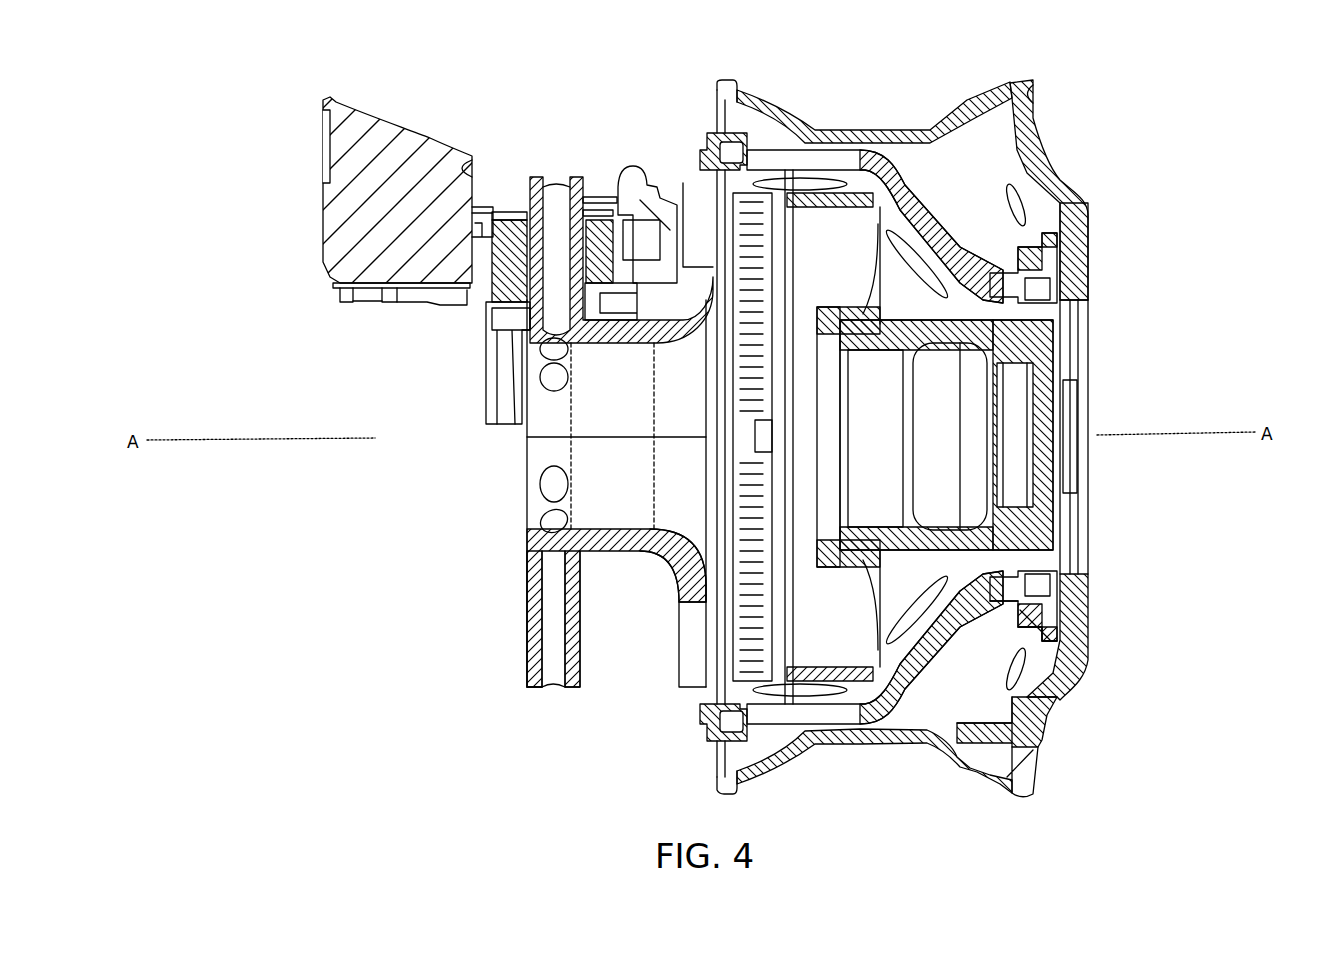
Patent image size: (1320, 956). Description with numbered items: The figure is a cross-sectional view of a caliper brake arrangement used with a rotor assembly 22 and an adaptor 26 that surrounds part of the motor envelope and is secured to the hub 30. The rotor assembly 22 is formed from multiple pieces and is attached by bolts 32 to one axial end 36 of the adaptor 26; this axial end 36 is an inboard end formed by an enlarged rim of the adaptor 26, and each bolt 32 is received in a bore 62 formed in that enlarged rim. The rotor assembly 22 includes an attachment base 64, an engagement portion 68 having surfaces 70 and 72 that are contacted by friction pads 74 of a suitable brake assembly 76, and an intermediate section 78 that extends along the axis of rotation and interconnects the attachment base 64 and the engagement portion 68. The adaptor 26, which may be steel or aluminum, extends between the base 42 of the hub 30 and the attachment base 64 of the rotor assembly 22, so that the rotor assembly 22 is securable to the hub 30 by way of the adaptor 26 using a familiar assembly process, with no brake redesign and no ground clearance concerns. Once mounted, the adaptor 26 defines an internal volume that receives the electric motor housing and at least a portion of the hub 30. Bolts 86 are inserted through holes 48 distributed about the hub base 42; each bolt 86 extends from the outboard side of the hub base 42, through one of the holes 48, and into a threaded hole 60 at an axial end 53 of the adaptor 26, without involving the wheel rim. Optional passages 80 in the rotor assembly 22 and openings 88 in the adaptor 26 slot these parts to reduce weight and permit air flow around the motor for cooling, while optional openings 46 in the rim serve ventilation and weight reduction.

The rotor assembly 22 is at (529, 534).
The adaptor 26 is at (886, 170).
The hub 30 is at (1030, 330).
The bolts 32 is at (700, 150).
The axial end 36 is at (700, 735).
The base 42 is at (1045, 620).
The openings 46 is at (1033, 723).
The holes 48 is at (1062, 233).
The axial end 53 is at (985, 605).
The threaded hole 60 is at (1010, 273).
The bore 62 is at (718, 140).
The attachment base 64 is at (689, 589).
The engagement portion 68 is at (529, 692).
The surface 70 is at (530, 615).
The surface 72 is at (582, 670).
The friction pads 74 is at (597, 227).
The brake assembly 76 is at (333, 277).
The intermediate section 78 is at (610, 538).
The passages 80 is at (547, 521).
The bolts 86 is at (1040, 587).
The openings 88 is at (803, 157).